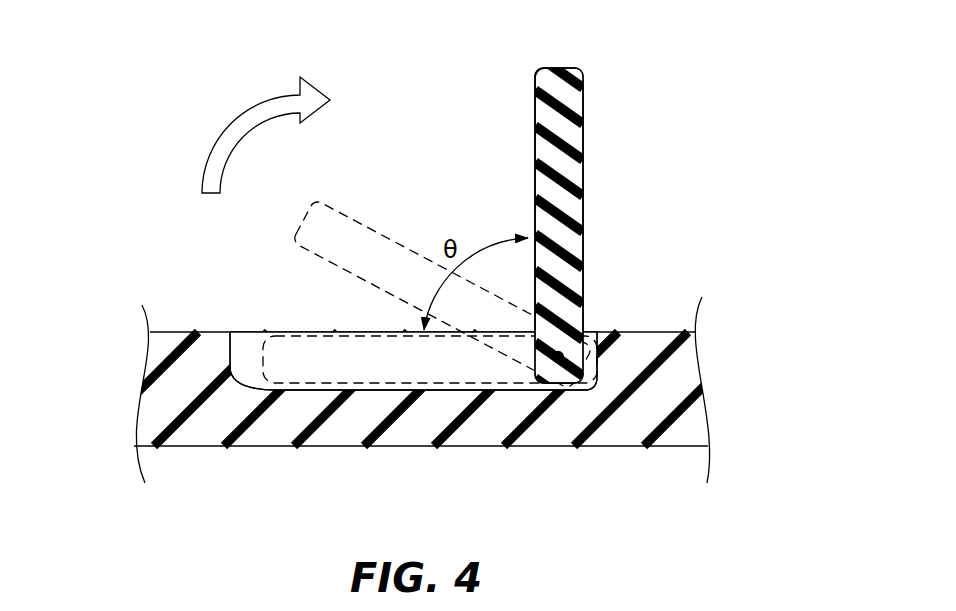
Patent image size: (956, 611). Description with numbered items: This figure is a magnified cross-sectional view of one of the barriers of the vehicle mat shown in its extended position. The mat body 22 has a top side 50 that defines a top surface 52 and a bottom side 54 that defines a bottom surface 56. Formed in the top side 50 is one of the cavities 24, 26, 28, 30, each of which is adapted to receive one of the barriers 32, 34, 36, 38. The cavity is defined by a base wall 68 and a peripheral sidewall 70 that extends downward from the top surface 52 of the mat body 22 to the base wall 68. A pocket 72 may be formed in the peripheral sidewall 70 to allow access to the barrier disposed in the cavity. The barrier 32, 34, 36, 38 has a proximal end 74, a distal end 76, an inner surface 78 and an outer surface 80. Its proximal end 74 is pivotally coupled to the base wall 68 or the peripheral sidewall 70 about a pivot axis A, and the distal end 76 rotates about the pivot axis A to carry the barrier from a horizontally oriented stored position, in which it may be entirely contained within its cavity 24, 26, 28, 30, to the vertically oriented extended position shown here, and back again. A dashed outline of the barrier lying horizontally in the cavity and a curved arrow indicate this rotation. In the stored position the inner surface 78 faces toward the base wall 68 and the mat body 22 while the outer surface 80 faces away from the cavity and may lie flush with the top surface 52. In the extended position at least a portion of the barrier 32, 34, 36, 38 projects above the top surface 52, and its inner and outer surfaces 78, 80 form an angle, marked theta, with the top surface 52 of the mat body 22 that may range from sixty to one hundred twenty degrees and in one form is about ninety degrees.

The mat body 22 is at (421, 390).
The cavity 24 is at (425, 448).
The cavity 26 is at (425, 448).
The cavity 28 is at (425, 448).
The cavity 30 is at (292, 393).
The barrier 32 is at (609, 206).
The barrier 34 is at (609, 206).
The barrier 36 is at (609, 206).
The barrier 38 is at (609, 206).
The top side 50 is at (188, 330).
The top surface 52 is at (640, 331).
The bottom side 54 is at (206, 450).
The bottom surface 56 is at (612, 447).
The base wall 68 is at (428, 372).
The peripheral sidewall 70 is at (592, 333).
The pocket 72 is at (250, 347).
The proximal end 74 is at (536, 66).
The distal end 76 is at (572, 391).
The inner surface 78 is at (535, 147).
The outer surface 80 is at (585, 155).
The pivot axis A is at (562, 360).